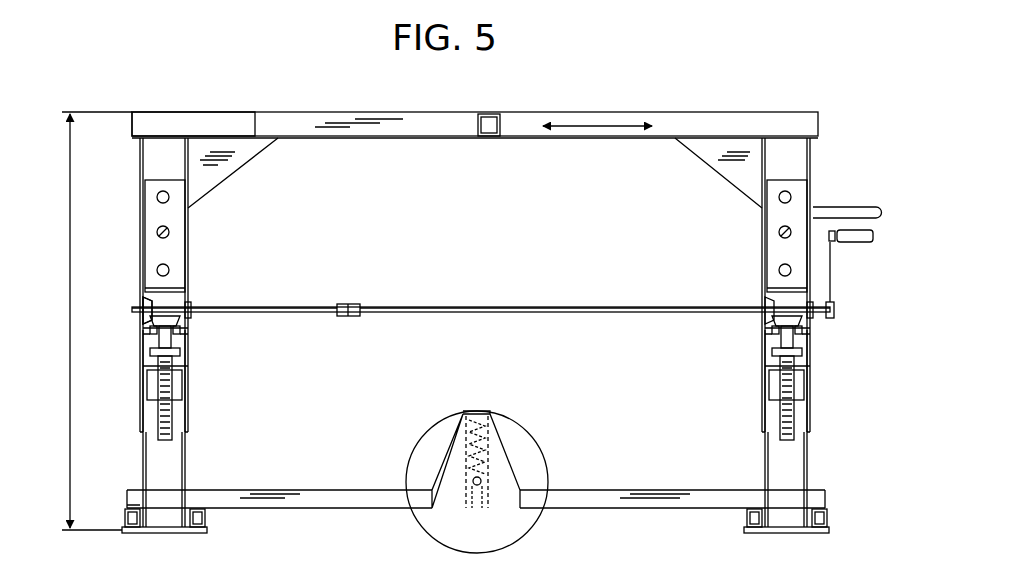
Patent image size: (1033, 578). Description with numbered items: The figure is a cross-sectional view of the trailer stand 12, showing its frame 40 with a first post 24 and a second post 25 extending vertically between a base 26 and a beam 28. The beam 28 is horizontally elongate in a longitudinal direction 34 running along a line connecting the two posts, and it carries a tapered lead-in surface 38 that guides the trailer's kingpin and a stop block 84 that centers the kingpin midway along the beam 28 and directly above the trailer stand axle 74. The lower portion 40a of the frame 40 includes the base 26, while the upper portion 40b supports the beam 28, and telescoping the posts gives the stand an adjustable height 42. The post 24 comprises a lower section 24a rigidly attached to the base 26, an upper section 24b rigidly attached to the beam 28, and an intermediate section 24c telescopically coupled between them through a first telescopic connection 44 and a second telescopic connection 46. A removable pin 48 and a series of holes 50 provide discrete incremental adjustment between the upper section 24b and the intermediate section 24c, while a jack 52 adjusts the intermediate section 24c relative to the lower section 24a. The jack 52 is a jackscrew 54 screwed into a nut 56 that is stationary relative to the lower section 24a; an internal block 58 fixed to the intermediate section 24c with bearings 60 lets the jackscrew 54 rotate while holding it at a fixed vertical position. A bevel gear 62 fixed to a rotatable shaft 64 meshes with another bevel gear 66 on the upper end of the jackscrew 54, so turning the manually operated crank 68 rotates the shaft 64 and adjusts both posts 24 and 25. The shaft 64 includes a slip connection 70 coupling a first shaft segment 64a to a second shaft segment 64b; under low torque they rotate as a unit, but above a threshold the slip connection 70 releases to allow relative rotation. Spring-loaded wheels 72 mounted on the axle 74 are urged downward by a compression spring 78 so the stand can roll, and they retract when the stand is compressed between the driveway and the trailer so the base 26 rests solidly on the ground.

The trailer stand 12 is at (764, 87).
The first post 24 is at (187, 229).
The lower section 24a is at (185, 431).
The upper section 24b is at (138, 210).
The intermediate section 24c is at (187, 360).
The second post 25 is at (812, 460).
The base 26 is at (200, 490).
The beam 28 is at (312, 111).
The longitudinal direction 34 is at (598, 124).
The tapered lead-in surface 38 is at (220, 125).
The frame 40 is at (446, 327).
The lower portion 40a is at (725, 424).
The upper portion 40b is at (748, 252).
The adjustable height 42 is at (73, 403).
The first telescopic connection 44 is at (142, 438).
The second telescopic connection 46 is at (140, 252).
The removable pin 48 is at (168, 237).
The holes 50 is at (170, 196).
The jack 52 is at (165, 455).
The jackscrew 54 is at (172, 420).
The nut 56 is at (182, 390).
The internal block 58 is at (180, 338).
The bearings 60 is at (150, 340).
The bevel gear 62 is at (145, 319).
The rotatable shaft 64 is at (332, 306).
The first shaft segment 64a is at (530, 306).
The second shaft segment 64b is at (300, 306).
The bevel gear 66 is at (167, 312).
The crank 68 is at (857, 245).
The slip connection 70 is at (344, 318).
The wheels 72 is at (415, 440).
The trailer stand axle 74 is at (480, 510).
The compression spring 78 is at (478, 412).
The stop block 84 is at (475, 124).